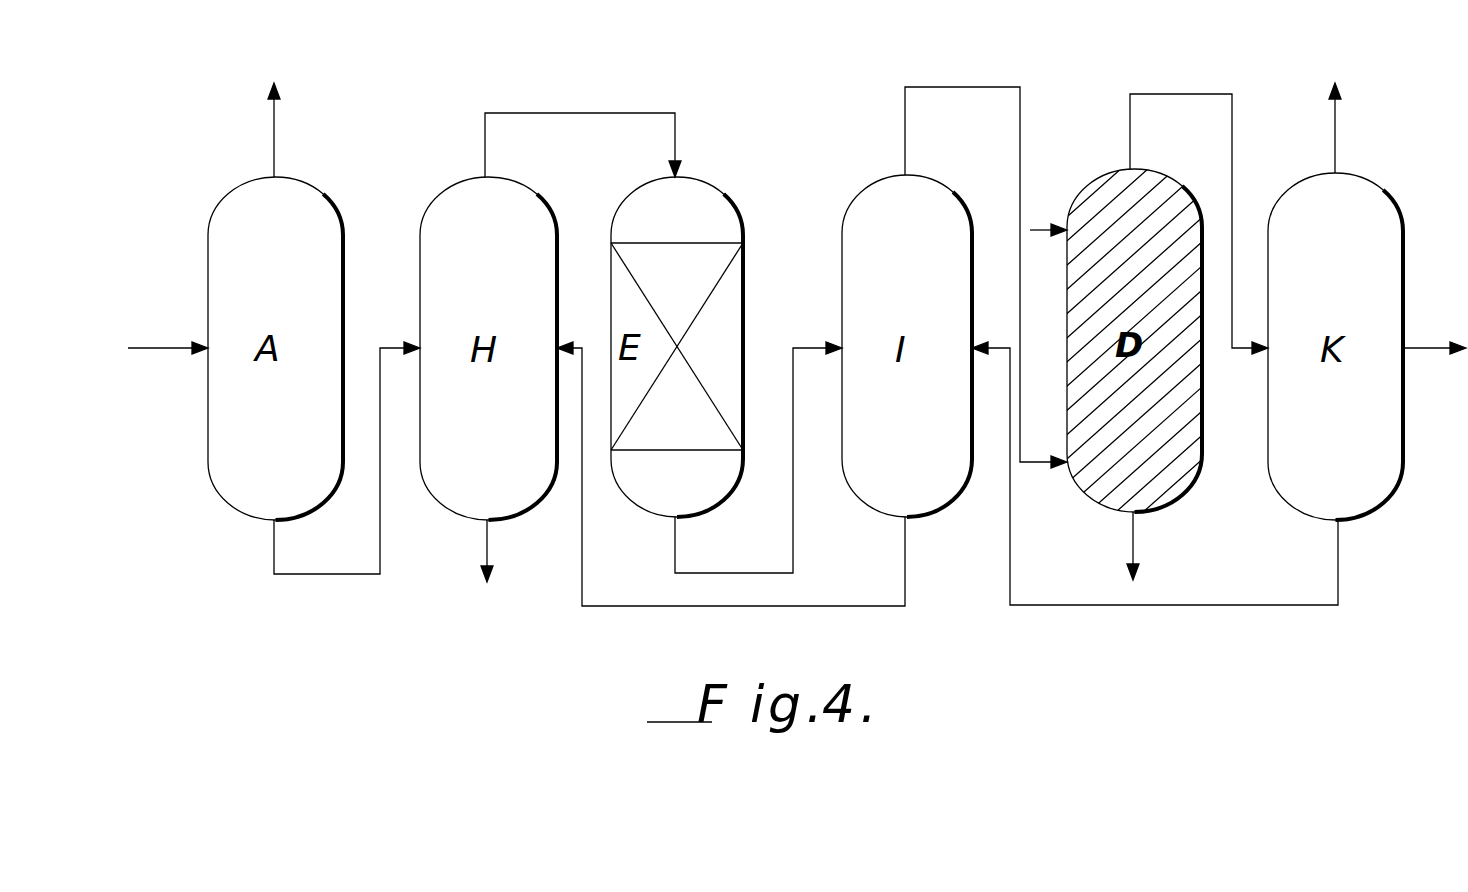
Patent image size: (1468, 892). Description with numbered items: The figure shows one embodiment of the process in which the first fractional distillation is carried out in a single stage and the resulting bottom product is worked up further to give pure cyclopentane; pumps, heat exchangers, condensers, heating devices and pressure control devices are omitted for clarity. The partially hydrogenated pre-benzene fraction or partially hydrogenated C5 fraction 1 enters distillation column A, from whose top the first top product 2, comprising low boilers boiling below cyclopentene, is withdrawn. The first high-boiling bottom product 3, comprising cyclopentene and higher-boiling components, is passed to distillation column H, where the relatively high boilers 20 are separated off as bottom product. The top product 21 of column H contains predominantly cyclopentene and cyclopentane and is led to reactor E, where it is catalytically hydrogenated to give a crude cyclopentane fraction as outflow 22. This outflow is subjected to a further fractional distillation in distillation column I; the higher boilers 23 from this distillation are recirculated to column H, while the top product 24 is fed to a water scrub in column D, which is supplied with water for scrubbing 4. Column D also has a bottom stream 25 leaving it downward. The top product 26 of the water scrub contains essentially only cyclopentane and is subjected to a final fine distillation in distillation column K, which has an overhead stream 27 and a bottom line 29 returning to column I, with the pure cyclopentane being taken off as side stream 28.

The partially hydrogenated pre-benzene fraction 1 is at (166, 348).
The first top product 2 is at (273, 132).
The first high-boiling bottom product 3 is at (315, 576).
The water for scrubbing 4 is at (1055, 205).
The relatively high boilers 20 is at (489, 545).
The top product 21 is at (545, 112).
The outflow 22 is at (731, 560).
The higher boilers 23 is at (825, 607).
The top product 24 is at (965, 87).
The bottoms stream from vessel D 25 is at (1135, 538).
The top product 26 is at (1195, 93).
The overhead stream from vessel K 27 is at (1337, 149).
The side stream 28 is at (1425, 345).
The line from vessel K bottom to vessel I 29 is at (1210, 607).